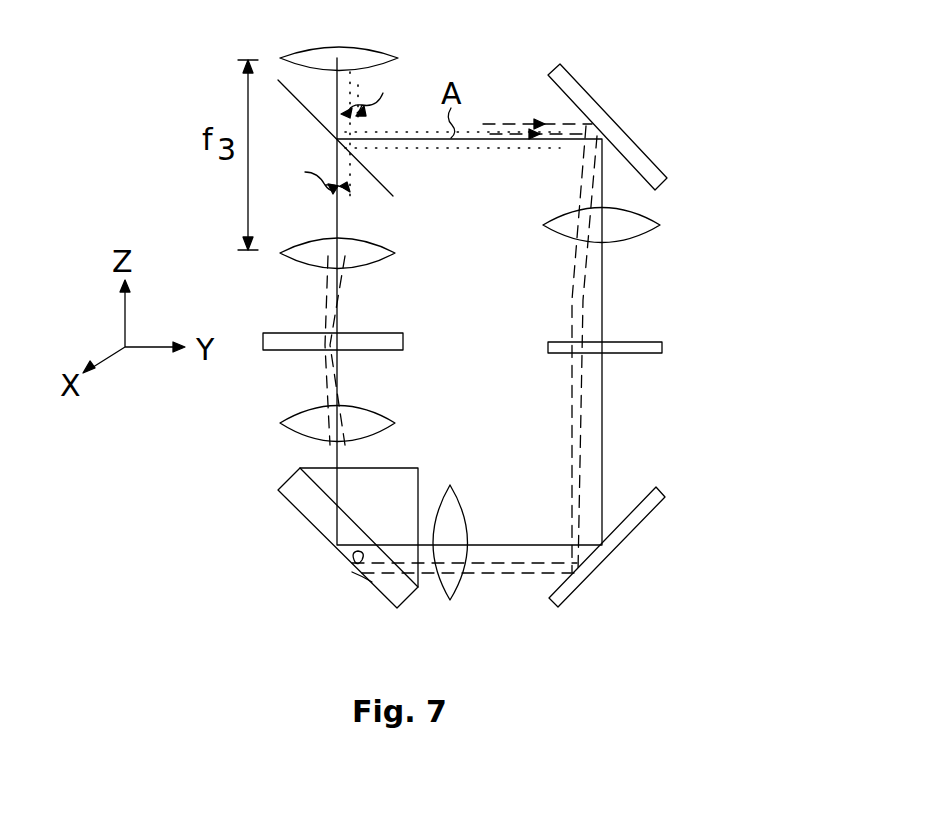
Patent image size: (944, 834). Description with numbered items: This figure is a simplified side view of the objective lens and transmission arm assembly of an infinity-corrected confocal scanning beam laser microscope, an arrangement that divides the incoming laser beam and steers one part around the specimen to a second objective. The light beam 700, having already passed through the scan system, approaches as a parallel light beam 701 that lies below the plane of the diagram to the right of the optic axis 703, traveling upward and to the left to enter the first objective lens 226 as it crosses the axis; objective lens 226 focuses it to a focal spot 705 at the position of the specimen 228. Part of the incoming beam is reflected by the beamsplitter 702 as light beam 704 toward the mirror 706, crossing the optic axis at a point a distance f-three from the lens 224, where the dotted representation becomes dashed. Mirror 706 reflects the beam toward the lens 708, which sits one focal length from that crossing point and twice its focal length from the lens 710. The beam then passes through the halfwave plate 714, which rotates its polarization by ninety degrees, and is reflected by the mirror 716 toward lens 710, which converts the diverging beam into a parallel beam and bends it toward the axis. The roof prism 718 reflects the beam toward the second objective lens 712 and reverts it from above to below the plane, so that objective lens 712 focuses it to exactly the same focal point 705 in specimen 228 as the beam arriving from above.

The lens 224 is at (396, 58).
The first objective lens 226 is at (394, 253).
The specimen 228 is at (404, 333).
The light beam 700 is at (389, 91).
The light beam 701 is at (309, 169).
The beamsplitter 702 is at (374, 173).
The optic axis 703 is at (339, 222).
The light beam 704 is at (533, 124).
The focal spot 705 is at (326, 345).
The mirror 706 is at (617, 134).
The lens 708 is at (658, 225).
The lens 710 is at (450, 600).
The second objective lens 712 is at (394, 423).
The halfwave plate 714 is at (662, 342).
The mirror 716 is at (598, 563).
The roof prism 718 is at (375, 584).